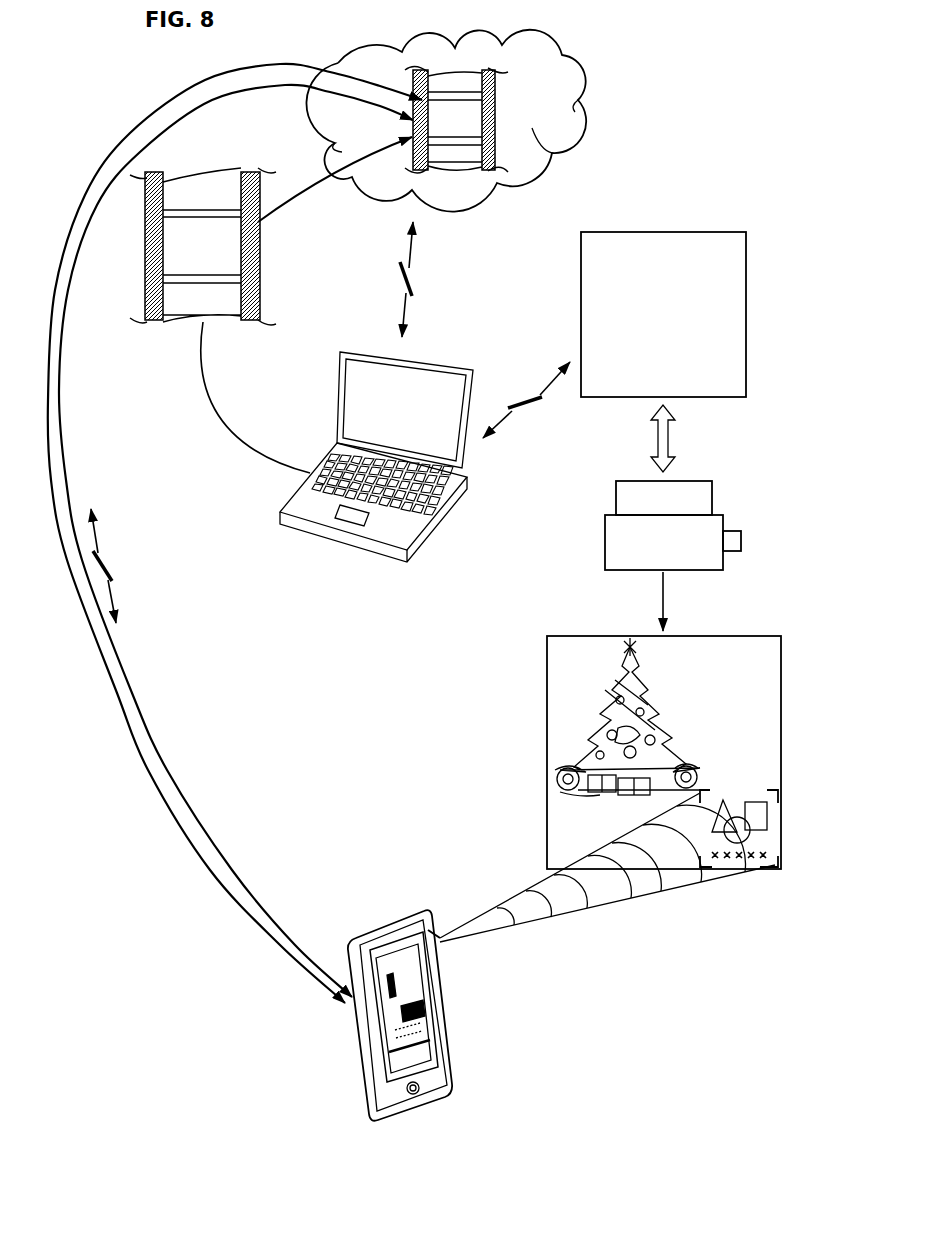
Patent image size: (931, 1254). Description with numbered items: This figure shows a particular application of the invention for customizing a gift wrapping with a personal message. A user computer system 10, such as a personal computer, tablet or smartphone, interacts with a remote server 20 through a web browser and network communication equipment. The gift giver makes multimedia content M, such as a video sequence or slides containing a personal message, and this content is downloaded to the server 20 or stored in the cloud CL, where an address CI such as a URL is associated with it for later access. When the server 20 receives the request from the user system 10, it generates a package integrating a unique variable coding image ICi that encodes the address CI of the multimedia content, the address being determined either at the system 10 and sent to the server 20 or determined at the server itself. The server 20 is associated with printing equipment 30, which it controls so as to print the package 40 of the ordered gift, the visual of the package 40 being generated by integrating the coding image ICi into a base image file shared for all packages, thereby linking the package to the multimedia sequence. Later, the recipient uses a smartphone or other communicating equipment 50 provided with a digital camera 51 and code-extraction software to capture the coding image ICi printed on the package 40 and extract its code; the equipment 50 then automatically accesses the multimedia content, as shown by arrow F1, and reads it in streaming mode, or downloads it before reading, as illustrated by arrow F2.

The cloud CL is at (586, 66).
The multimedia content M is at (140, 247).
The user computer system 10 is at (438, 519).
The remote server 20 is at (663, 314).
The printing equipment 30 is at (602, 540).
The package 40 is at (544, 749).
The unique coding image ICi is at (746, 870).
The communicating equipment 50 is at (384, 915).
The digital camera 51 is at (448, 940).
The arrow F1 is at (200, 822).
The arrow F2 is at (184, 833).
The address CI is at (137, 700).